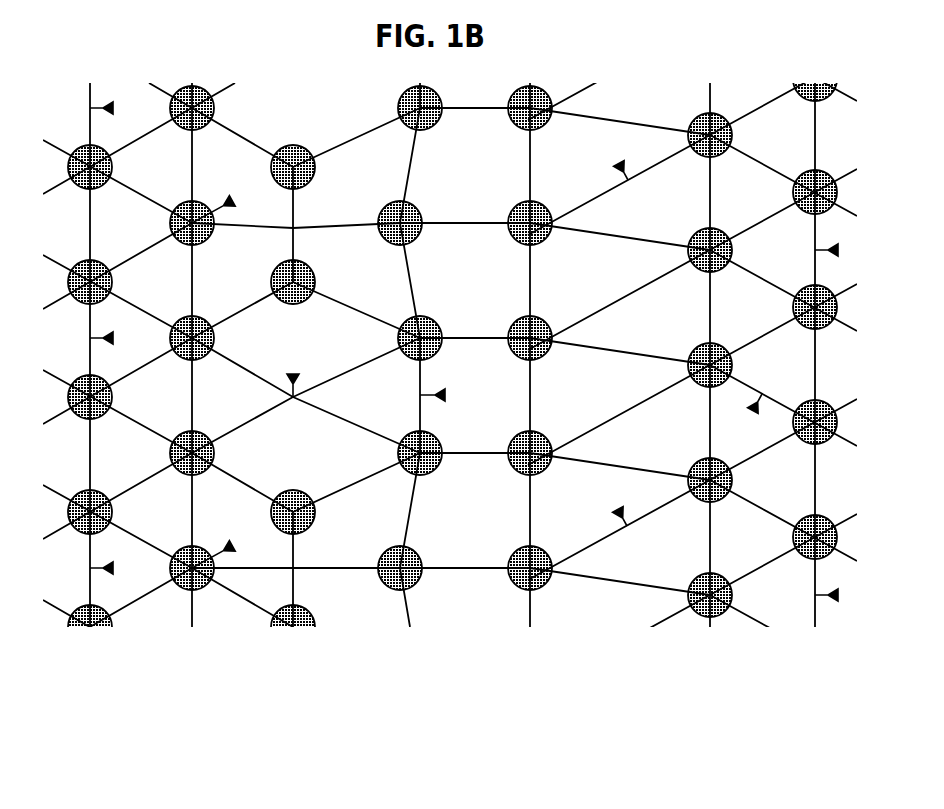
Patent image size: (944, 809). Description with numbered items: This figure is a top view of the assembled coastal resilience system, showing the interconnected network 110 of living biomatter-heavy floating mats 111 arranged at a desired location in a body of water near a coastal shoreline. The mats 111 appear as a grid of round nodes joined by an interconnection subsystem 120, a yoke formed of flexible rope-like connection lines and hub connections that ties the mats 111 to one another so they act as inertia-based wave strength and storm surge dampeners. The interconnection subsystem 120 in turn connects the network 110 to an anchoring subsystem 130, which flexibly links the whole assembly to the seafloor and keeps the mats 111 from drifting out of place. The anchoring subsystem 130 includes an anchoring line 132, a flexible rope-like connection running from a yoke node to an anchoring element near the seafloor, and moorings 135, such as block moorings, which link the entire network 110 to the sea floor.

The interconnected network 110 is at (845, 645).
The floating mat 111 is at (692, 612).
The interconnection subsystem 120 is at (473, 574).
The anchoring subsystem 130 is at (606, 178).
The anchoring line 132 is at (822, 600).
The mooring 135 is at (447, 405).